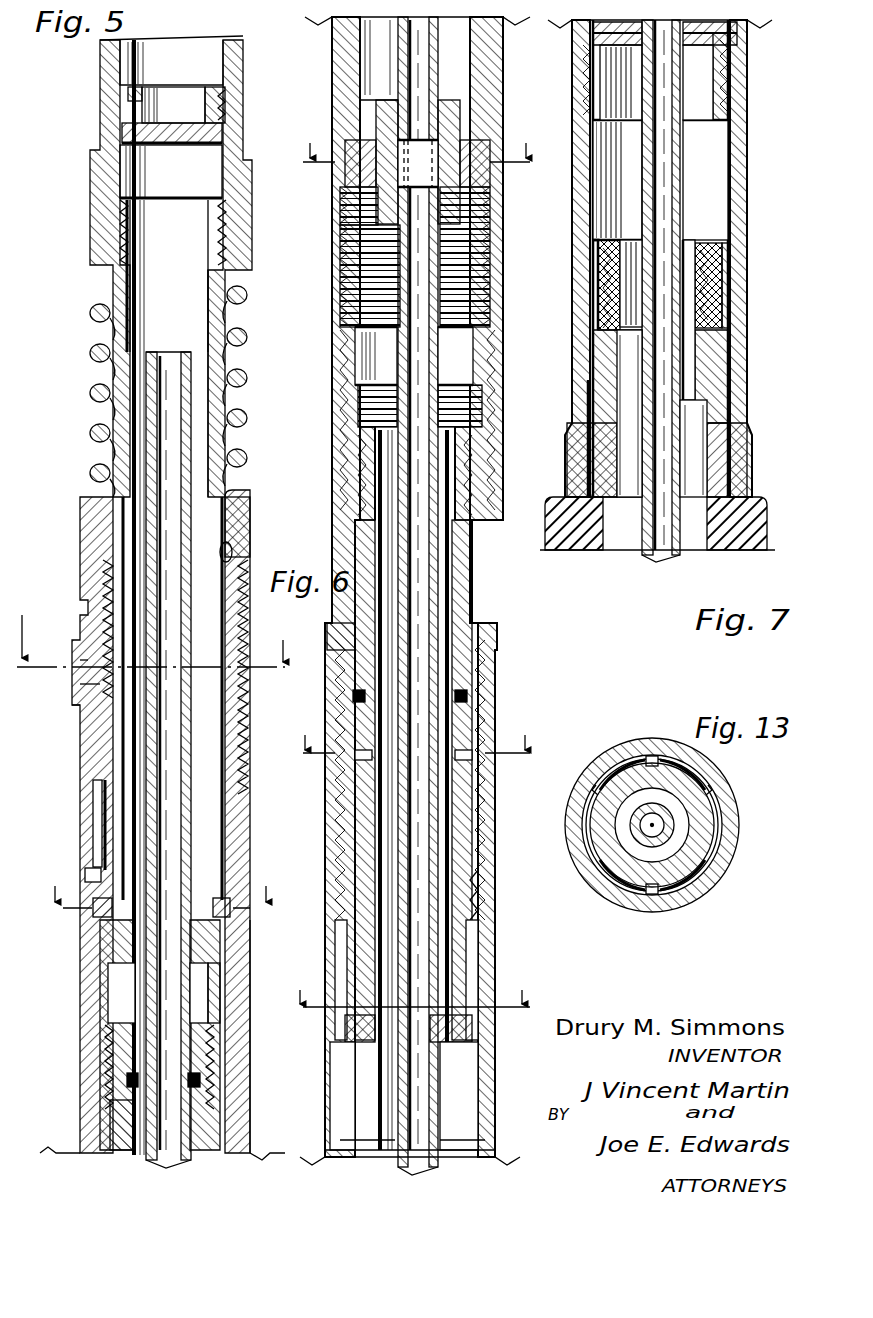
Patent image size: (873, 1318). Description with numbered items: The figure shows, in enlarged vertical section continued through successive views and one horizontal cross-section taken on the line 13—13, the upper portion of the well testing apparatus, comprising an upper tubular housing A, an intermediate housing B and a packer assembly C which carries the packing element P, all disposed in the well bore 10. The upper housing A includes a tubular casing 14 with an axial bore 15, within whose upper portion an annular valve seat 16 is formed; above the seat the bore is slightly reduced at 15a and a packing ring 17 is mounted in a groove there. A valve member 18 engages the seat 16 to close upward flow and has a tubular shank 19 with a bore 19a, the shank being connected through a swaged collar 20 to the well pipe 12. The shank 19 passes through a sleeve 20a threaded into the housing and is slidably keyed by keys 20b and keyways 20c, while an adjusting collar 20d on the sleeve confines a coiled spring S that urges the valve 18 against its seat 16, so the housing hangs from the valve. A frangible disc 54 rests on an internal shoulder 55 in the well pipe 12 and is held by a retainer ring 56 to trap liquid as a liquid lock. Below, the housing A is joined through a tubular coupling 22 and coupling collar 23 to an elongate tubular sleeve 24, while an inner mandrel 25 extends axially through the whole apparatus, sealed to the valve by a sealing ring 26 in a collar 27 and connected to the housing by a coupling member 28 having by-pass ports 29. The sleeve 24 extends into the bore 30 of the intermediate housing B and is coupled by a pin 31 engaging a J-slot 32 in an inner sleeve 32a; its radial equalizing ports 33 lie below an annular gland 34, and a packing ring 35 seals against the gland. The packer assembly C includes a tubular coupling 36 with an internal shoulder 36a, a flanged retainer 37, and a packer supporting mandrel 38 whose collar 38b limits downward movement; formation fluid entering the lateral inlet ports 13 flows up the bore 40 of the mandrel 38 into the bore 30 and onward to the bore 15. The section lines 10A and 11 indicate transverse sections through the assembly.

In FIG. 5, the well bore 10 is at (156, 911).
In FIG. 5, the section line 10A- 10A is at (172, 637).
In FIG. 6, the section line 11- 11 is at (420, 142).
In FIG. 5, the well pipe 12 is at (218, 306).
In FIG. 6, the well pipe 12 is at (416, 735).
In FIG. 6, the lateral inlet ports 13 is at (414, 989).
In FIG. 5, the tubular casing 14 is at (90, 797).
In FIG. 6, the tubular casing 14 is at (503, 40).
In FIG. 5, the axial bore 15 is at (85, 984).
In FIG. 5, the reduced bore portion 15a is at (85, 876).
In FIG. 5, the annular valve seat 16 is at (92, 950).
In FIG. 5, the packing ring 17 is at (230, 902).
In FIG. 5, the valve member 18 is at (215, 958).
In FIG. 5, the tubular shank 19 is at (240, 628).
In FIG. 5, the bore of tubular shank 19a is at (232, 552).
In FIG. 5, the swaged collar 20 is at (250, 190).
In FIG. 5, the sleeve 20a is at (88, 660).
In FIG. 5, the keys 20b is at (90, 684).
In FIG. 5, the keyways 20c is at (78, 705).
In FIG. 5, the adjusting collar 20d is at (243, 522).
In FIG. 6, the tubular coupling 22 is at (503, 245).
In FIG. 6, the coupling collar 23 is at (495, 447).
In FIG. 6, the tubular sleeve 24 is at (466, 580).
In FIG. 13, the tubular sleeve 24 is at (720, 790).
In FIG. 5, the inner tubular mandrel 25 is at (192, 397).
In FIG. 6, the inner tubular mandrel 25 is at (437, 60).
In FIG. 7, the inner tubular mandrel 25 is at (683, 72).
In FIG. 13, the inner tubular mandrel 25 is at (670, 820).
In FIG. 5, the sealing ring 26 is at (127, 1080).
In FIG. 5, the collar 27 is at (120, 1122).
In FIG. 6, the coupling member 28 is at (490, 205).
In FIG. 6, the by-pass ports 29 is at (472, 173).
In FIG. 6, the bore of intermediate housing 30 is at (480, 1105).
In FIG. 13, the bore of intermediate housing 30 is at (735, 866).
In FIG. 6, the pin 31 is at (350, 1032).
In FIG. 13, the pin 31 is at (625, 745).
In FIG. 6, the J-slot 32 is at (470, 945).
In FIG. 13, the J-slot 32 is at (718, 838).
In FIG. 6, the inner sleeve 32a is at (495, 895).
In FIG. 13, the inner sleeve 32a is at (580, 882).
In FIG. 6, the equalizing ports 33 is at (480, 774).
In FIG. 6, the annular gland 34 is at (497, 635).
In FIG. 6, the packing ring 35 is at (490, 690).
In FIG. 7, the tubular coupling 36 is at (750, 277).
In FIG. 7, the internal shoulder 36a is at (745, 112).
In FIG. 7, the flanged retainer 37 is at (725, 418).
In FIG. 7, the packer supporting mandrel 38 is at (710, 345).
In FIG. 7, the collar 38b is at (720, 303).
In FIG. 7, the bore of supporting mandrel 40 is at (690, 246).
In FIG. 5, the frangible disc 54 is at (200, 145).
In FIG. 5, the internal shoulder 55 is at (228, 152).
In FIG. 5, the retainer ring 56 is at (228, 117).
In FIG. 5, the upper tubular housing A is at (237, 1037).
In FIG. 6, the upper tubular housing A is at (503, 80).
In FIG. 6, the intermediate housing B is at (496, 812).
In FIG. 7, the intermediate housing B is at (745, 42).
In FIG. 13, the intermediate housing B is at (715, 898).
In FIG. 7, the packer assembly C is at (740, 463).
In FIG. 7, the packing element P is at (765, 525).
In FIG. 5, the coiled spring S is at (246, 340).